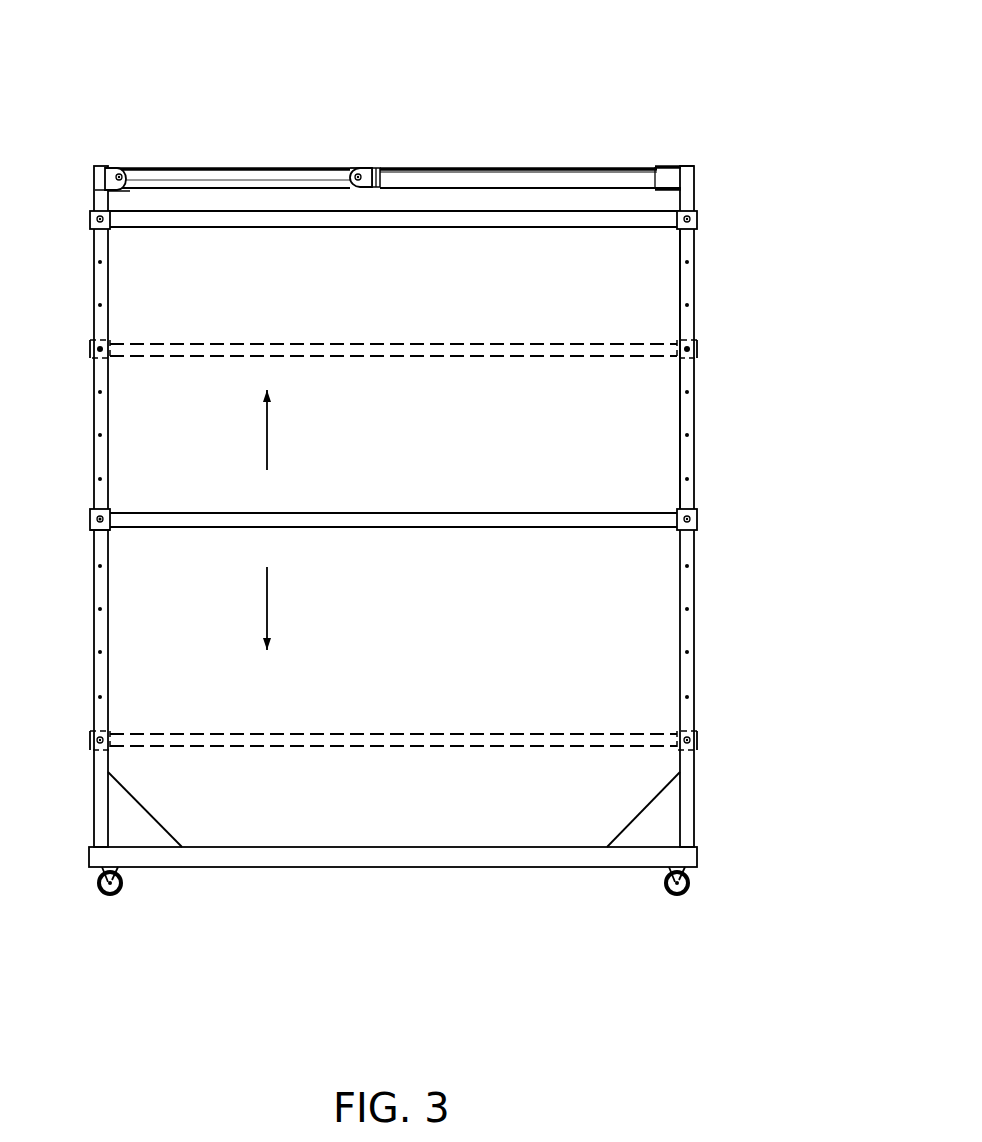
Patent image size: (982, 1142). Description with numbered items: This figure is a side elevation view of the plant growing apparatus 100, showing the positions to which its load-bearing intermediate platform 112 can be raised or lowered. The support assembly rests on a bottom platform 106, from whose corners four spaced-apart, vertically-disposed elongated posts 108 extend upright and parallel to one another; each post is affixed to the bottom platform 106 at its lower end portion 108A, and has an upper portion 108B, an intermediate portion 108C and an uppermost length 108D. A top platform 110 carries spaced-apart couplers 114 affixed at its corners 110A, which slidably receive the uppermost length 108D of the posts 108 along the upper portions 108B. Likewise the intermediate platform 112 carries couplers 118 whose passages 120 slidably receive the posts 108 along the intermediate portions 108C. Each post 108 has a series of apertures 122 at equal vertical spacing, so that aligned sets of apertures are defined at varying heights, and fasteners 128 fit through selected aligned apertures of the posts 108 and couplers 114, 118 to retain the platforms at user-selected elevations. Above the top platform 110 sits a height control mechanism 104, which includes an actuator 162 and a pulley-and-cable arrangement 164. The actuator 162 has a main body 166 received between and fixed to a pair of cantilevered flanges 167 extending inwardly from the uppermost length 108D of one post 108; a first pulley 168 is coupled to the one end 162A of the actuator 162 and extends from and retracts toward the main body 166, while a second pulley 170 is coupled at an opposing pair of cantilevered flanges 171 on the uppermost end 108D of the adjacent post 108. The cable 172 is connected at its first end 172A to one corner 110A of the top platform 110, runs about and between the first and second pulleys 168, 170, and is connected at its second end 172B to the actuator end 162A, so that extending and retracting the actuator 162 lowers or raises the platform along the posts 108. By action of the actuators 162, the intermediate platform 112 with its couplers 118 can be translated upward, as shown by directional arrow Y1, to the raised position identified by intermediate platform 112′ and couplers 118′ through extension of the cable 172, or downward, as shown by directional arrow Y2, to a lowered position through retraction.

The plant growing apparatus 100 is at (571, 75).
The height control mechanism 104 is at (479, 193).
The bottom platform 106 is at (352, 857).
The elongated post 108 is at (716, 474).
The lower end portion of post 108A is at (705, 726).
The upper portion of post 108B is at (706, 233).
The intermediate portion of post 108C is at (705, 514).
The uppermost length of post 108D is at (100, 178).
The top platform 110 is at (360, 217).
The corner of top platform 110A is at (87, 226).
The intermediate platform 112 is at (483, 518).
The intermediate platform in raised position 112′ is at (390, 350).
The coupler of top platform 114 is at (95, 212).
The coupler of intermediate platform 118 is at (92, 520).
The coupler in raised position 118′ is at (90, 350).
The passage 120 is at (101, 518).
The aperture 122 is at (686, 610).
The fastener 128 is at (99, 521).
The actuator 162 is at (521, 158).
The end of actuator 162A is at (374, 169).
The main body of actuator 166 is at (551, 180).
The pulley-and-cable arrangement 164 is at (246, 156).
The cantilevered flange 167 is at (662, 189).
The first pulley 168 is at (366, 169).
The second pulley 170 is at (128, 168).
The cantilevered flange 171 is at (121, 190).
The cable 172 is at (205, 187).
The first end of cable 172A is at (113, 198).
The second end of cable 172B is at (353, 167).
The directional arrow Y1 is at (268, 443).
The directional arrow Y2 is at (268, 595).